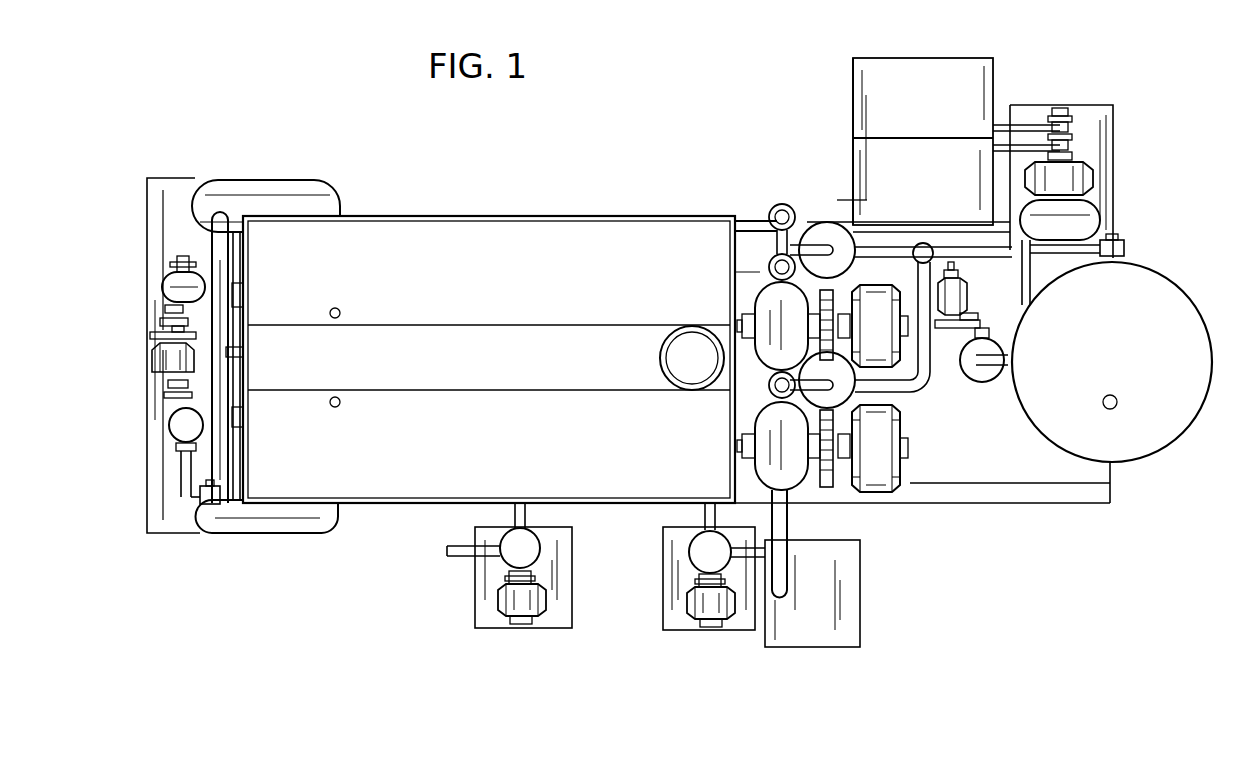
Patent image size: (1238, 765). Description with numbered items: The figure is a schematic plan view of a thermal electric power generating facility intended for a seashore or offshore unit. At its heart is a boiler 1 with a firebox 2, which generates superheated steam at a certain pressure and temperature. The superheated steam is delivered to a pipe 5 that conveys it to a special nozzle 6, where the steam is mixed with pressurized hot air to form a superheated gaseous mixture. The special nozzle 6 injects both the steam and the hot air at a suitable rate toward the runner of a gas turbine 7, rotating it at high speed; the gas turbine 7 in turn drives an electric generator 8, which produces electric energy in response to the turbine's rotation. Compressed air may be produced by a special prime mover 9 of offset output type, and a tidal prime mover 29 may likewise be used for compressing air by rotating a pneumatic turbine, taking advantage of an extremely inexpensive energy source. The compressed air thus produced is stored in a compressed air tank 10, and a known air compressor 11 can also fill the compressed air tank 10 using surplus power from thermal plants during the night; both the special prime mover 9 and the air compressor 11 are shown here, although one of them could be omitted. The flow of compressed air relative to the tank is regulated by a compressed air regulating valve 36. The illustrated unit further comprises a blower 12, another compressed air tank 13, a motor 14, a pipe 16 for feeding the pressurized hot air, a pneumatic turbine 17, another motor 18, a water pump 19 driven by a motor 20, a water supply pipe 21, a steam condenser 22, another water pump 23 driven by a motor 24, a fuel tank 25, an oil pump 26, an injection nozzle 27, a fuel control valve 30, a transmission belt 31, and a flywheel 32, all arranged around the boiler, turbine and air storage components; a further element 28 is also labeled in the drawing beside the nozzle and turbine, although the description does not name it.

The boiler 1 is at (493, 238).
The firebox 2 is at (418, 335).
The pipe 5 is at (750, 224).
The special nozzle 6 is at (806, 226).
The gas turbine 7 is at (772, 356).
The electric generator 8 is at (883, 333).
The special prime mover 9 is at (840, 141).
The compressed air tank 10 is at (1167, 430).
The air compressor 11 is at (990, 373).
The blower 12 is at (166, 286).
The compressed air tank 13 is at (265, 196).
The motor 14 is at (156, 356).
The pipe 16 is at (989, 258).
The pneumatic turbine 17 is at (1090, 221).
The motor 18 is at (1090, 176).
The water pump 19 is at (505, 540).
The motor 20 is at (510, 595).
The water supply pipe 21 is at (472, 555).
The steam condenser 22 is at (850, 597).
The water pump 23 is at (700, 552).
The motor 24 is at (690, 600).
The fuel tank 25 is at (331, 518).
The oil pump 26 is at (176, 425).
The injection nozzle 27 is at (242, 355).
The pump 28 is at (823, 247).
The tidal prime mover 29 is at (875, 112).
The fuel control valve 30 is at (205, 494).
The transmission belt 31 is at (1015, 150).
The flywheel 32 is at (836, 488).
The compressed air regulating valve 36 is at (1124, 250).